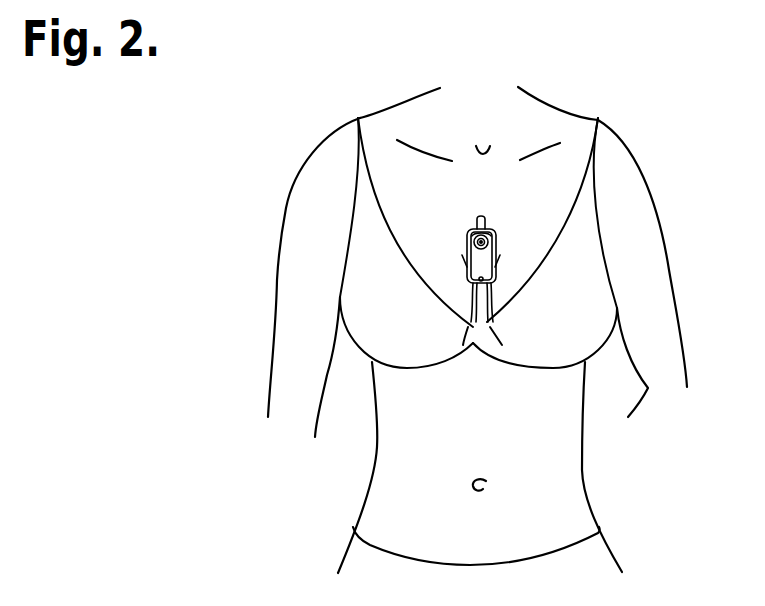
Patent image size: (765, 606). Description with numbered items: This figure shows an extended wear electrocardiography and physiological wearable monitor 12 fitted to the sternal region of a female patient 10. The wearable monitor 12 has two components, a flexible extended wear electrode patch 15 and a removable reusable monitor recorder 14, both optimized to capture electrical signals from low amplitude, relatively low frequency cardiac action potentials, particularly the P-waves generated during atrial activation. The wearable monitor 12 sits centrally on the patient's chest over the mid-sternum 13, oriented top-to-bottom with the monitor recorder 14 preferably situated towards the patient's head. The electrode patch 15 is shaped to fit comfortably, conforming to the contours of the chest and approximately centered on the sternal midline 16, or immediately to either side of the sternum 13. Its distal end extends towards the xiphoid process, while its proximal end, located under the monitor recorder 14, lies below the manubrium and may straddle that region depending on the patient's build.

The female patient 10 is at (642, 171).
The extended wear electrocardiography and physiological wearable monitor 12 is at (512, 223).
The mid-sternum 13 is at (446, 214).
The monitor recorder 14 is at (498, 240).
The electrode patch 15 is at (491, 300).
The sternal midline 16 is at (480, 345).